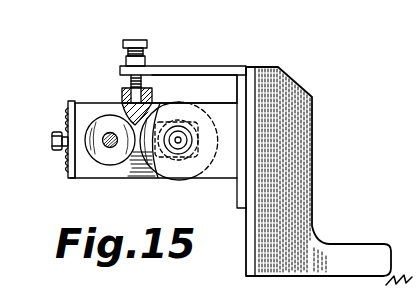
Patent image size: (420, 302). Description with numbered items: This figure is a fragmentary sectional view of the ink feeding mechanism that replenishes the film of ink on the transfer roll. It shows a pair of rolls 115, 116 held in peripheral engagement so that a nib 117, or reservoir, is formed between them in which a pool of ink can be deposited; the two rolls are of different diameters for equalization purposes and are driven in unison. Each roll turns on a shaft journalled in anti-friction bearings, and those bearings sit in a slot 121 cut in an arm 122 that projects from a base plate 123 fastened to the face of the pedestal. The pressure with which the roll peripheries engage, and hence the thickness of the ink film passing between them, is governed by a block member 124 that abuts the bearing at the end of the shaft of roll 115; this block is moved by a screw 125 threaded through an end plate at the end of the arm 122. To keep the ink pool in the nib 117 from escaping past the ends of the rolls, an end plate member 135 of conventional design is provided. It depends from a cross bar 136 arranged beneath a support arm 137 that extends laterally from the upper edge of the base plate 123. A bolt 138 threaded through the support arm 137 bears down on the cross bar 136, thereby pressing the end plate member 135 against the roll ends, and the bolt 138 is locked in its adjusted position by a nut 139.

The roll 115 is at (106, 160).
The roll 116 is at (161, 168).
The nib 117 is at (124, 101).
The slot 121 is at (70, 169).
The arm 122 is at (76, 108).
The base plate 123 is at (247, 68).
The block member 124 is at (65, 157).
The screw 125 is at (54, 133).
The end plate member 135 is at (153, 96).
The cross bar 136 is at (129, 88).
The support arm 137 is at (243, 78).
The bolt 138 is at (147, 43).
The nut 139 is at (146, 60).